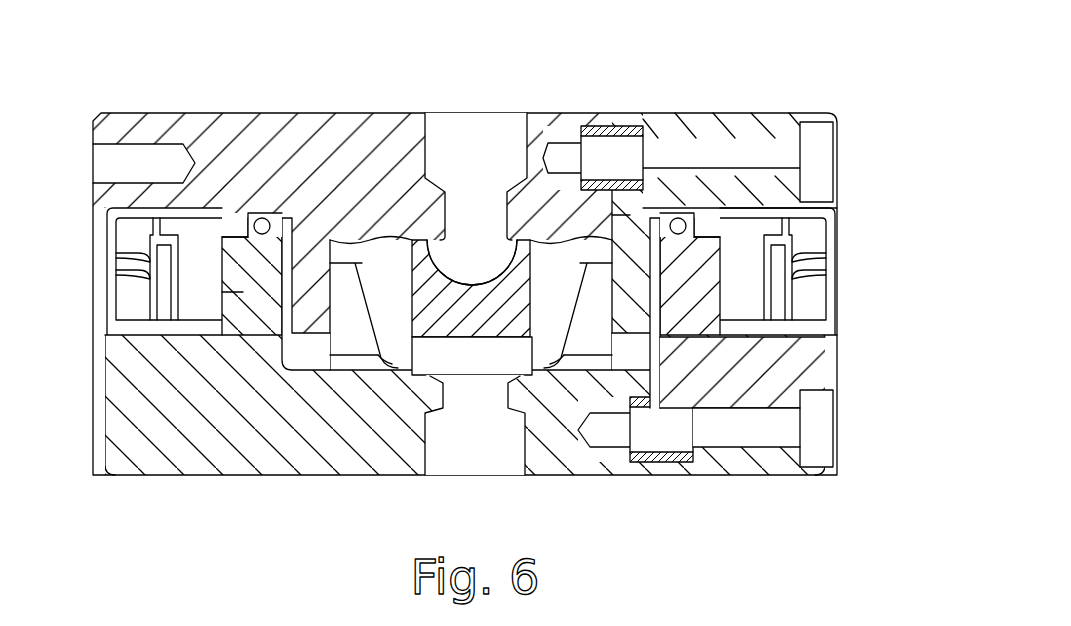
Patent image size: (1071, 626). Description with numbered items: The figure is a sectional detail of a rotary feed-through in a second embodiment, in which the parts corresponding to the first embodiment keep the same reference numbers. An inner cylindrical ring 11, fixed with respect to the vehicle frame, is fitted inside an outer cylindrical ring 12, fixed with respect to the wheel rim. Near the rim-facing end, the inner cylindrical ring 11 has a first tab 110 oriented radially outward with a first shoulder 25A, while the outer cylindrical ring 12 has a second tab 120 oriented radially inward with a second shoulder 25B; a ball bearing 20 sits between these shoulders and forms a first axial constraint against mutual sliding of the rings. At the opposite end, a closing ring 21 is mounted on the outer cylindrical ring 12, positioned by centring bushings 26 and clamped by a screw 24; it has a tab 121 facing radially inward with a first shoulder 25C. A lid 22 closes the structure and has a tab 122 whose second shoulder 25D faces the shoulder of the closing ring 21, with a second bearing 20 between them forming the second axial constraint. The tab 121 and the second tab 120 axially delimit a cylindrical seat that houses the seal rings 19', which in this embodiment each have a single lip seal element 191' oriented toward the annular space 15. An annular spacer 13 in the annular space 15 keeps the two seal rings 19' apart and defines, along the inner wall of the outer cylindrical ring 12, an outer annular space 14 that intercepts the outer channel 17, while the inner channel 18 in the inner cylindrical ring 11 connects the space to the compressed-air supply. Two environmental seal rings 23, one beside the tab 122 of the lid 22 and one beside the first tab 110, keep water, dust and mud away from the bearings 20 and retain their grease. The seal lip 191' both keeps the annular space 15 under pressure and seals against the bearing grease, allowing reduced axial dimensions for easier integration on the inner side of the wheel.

The inner cylindrical ring 11 is at (297, 408).
The outer cylindrical ring 12 is at (305, 150).
The annular spacer 13 is at (457, 317).
The outer annular space 14 is at (457, 268).
The annular space 15 is at (453, 367).
The outer channel 17 is at (465, 145).
The inner channel 18 is at (485, 455).
The seal ring 19' is at (471, 314).
The bearing 20 is at (262, 217).
The closing ring 21 is at (778, 118).
The lid 22 is at (745, 368).
The environmental seal ring 23 is at (112, 262).
The screw 24 is at (823, 147).
The first shoulder 25A is at (237, 237).
The second shoulder 25B is at (285, 218).
The first shoulder 25C is at (657, 217).
The second shoulder 25D is at (703, 233).
The centring bushing 26 is at (600, 128).
The first tab 110 is at (243, 292).
The second tab 120 is at (308, 302).
The tab 121 is at (630, 215).
The tab 122 is at (715, 258).
The lip seal element 191' is at (472, 445).